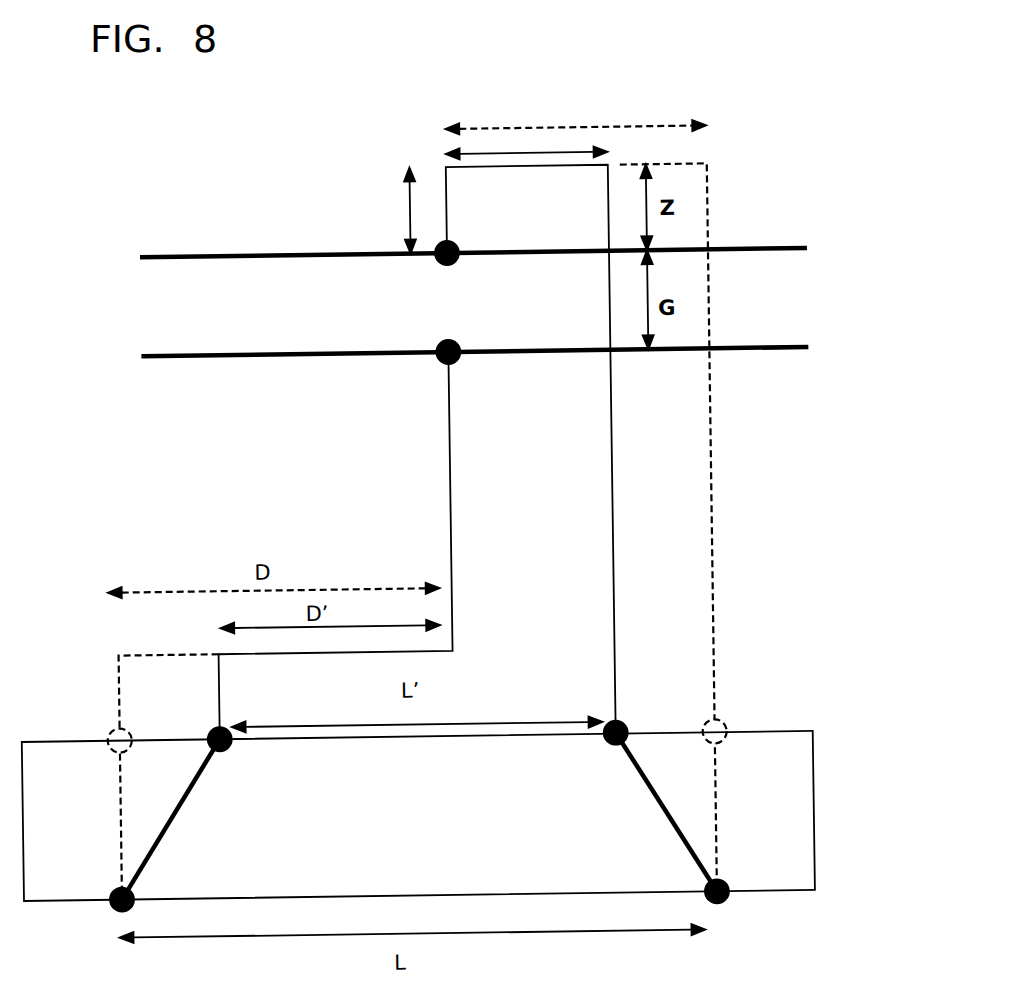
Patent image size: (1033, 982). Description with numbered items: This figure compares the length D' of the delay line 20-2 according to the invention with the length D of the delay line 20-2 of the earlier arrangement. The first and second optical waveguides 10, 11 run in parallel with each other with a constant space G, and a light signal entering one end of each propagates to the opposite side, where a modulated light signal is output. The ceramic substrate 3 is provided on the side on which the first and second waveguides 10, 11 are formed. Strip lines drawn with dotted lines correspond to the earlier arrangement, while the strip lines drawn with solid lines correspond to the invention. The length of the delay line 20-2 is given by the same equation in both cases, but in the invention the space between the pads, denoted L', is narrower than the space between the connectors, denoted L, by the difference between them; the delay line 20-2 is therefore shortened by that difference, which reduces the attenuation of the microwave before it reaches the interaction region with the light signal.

The first optical waveguide 10 is at (280, 252).
The second optical waveguide 11 is at (281, 358).
The delay line 20-2 is at (375, 649).
The ceramic substrate 3 is at (775, 775).